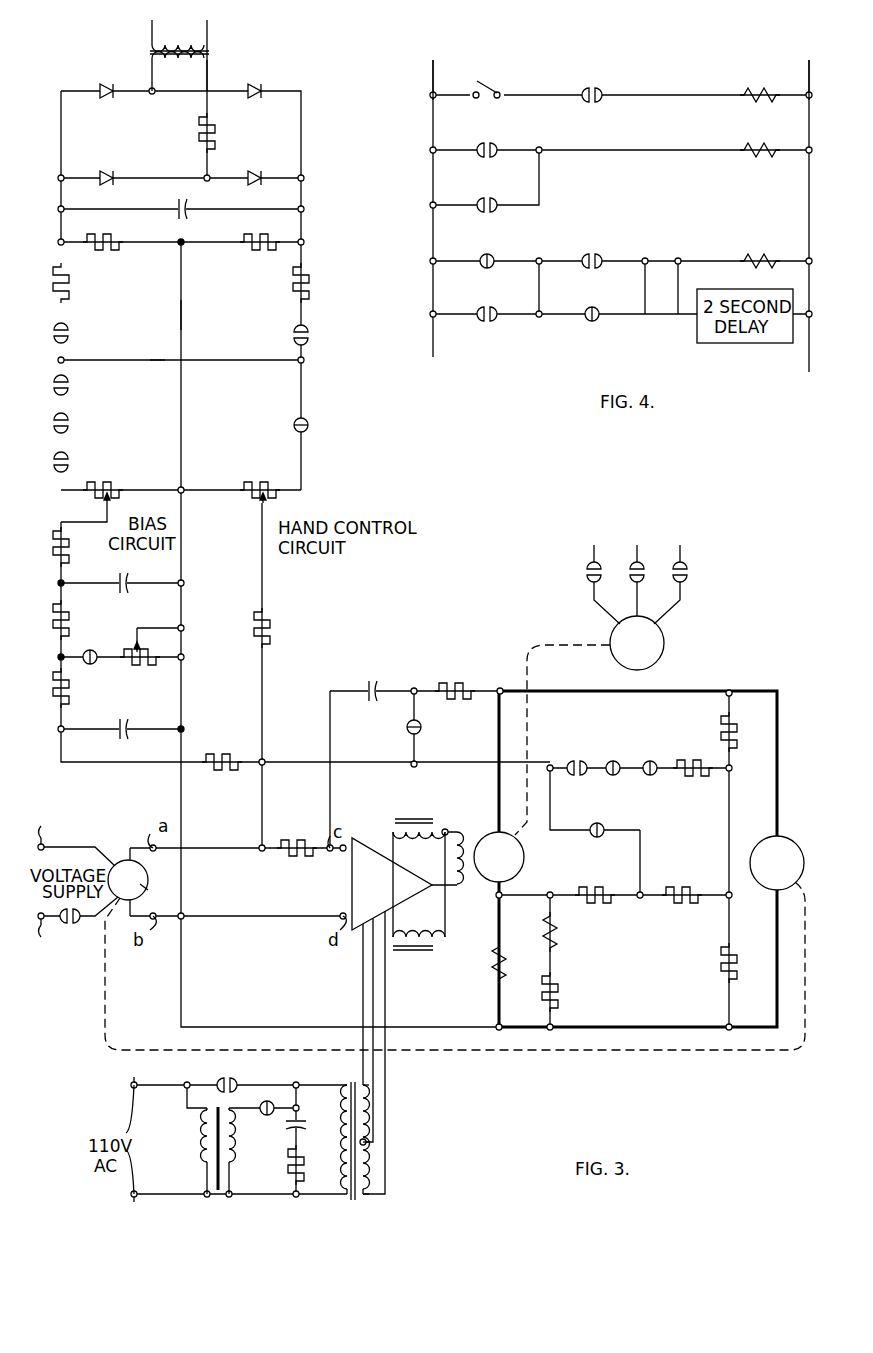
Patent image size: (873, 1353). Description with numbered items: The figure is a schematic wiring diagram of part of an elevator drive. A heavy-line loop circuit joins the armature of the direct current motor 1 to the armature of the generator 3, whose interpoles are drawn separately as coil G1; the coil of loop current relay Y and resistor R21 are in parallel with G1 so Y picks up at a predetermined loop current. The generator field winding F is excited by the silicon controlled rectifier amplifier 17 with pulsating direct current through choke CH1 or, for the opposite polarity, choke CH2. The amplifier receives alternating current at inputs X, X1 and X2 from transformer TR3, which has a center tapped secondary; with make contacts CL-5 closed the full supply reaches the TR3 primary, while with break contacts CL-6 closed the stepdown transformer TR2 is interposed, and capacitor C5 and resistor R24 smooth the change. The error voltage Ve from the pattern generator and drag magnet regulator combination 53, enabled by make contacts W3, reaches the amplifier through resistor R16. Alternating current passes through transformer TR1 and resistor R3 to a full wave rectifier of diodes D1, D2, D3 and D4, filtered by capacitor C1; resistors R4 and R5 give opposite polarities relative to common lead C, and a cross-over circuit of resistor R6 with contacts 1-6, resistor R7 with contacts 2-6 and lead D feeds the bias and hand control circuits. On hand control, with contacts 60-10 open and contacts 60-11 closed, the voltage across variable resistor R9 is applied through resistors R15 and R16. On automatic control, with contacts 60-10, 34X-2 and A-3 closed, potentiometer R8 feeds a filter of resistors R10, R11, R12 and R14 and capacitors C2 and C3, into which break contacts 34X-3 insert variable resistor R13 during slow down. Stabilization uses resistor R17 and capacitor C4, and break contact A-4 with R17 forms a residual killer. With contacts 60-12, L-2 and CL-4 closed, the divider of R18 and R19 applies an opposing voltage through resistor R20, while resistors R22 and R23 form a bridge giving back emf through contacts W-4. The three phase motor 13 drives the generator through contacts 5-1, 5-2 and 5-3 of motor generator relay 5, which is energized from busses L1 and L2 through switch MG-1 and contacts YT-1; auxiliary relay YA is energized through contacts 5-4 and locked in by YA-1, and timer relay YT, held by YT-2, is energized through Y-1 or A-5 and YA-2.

In FIG. 3, the transformer TR1 is at (208, 51).
In FIG. 3, the diode D1 is at (111, 82).
In FIG. 3, the diode D2 is at (111, 171).
In FIG. 3, the diode D3 is at (262, 70).
In FIG. 3, the diode D4 is at (262, 159).
In FIG. 3, the resistor R3 is at (200, 120).
In FIG. 3, the capacitor C1 is at (178, 200).
In FIG. 3, the resistor R4 is at (112, 234).
In FIG. 3, the resistor R5 is at (260, 234).
In FIG. 3, the resistor R6 is at (69, 282).
In FIG. 3, the resistor R7 is at (309, 281).
In FIG. 3, the common lead C is at (181, 302).
In FIG. 3, the lead D is at (153, 360).
In FIG. 3, the make contacts of the up direction relay 1-6 is at (68, 338).
In FIG. 3, the make contacts of the down direction relay 2-6 is at (308, 341).
In FIG. 3, the make contacts 60-10 is at (68, 382).
In FIG. 3, the make contacts 34X-2 is at (68, 423).
In FIG. 3, the make contacts A-3 is at (68, 460).
In FIG. 3, the break contacts 60-11 is at (308, 425).
In FIG. 3, the potentiometer R8 is at (114, 482).
In FIG. 3, the variable resistor R9 is at (268, 490).
In FIG. 3, the resistor R10 is at (71, 552).
In FIG. 3, the capacitor C2 is at (134, 566).
In FIG. 3, the resistor R11 is at (70, 614).
In FIG. 3, the break contacts 34X-3 is at (94, 638).
In FIG. 3, the variable resistor R13 is at (140, 673).
In FIG. 3, the resistor R12 is at (69, 689).
In FIG. 3, the capacitor C3 is at (132, 714).
In FIG. 3, the resistor R14 is at (224, 754).
In FIG. 3, the resistor R15 is at (270, 624).
In FIG. 3, the resistor R16 is at (298, 848).
In FIG. 3, the capacitor C4 is at (384, 668).
In FIG. 3, the resistor R17 is at (460, 683).
In FIG. 3, the break contact of the brake monitor relay A-4 is at (421, 727).
In FIG. 3, the pattern generator and drag magnet regulator combination 53 is at (146, 888).
In FIG. 3, the make contacts of the pattern selector relay W3 is at (64, 930).
In FIG. 3, the error voltage Ve is at (128, 880).
In FIG. 3, the silicon controlled rectifier amplifier 17 is at (352, 882).
In FIG. 3, the choke CH2 is at (393, 819).
In FIG. 3, the choke CH1 is at (430, 970).
In FIG. 3, the field winding F is at (464, 832).
In FIG. 3, the generator 3 is at (524, 850).
In FIG. 3, the generator interpole coil G1 is at (492, 958).
In FIG. 3, the loop current relay Y is at (557, 924).
In FIG. 3, the resistor R21 is at (558, 986).
In FIG. 3, the resistor R22 is at (590, 895).
In FIG. 3, the resistor R23 is at (682, 895).
In FIG. 3, the resistor R19 is at (724, 958).
In FIG. 3, the resistor R18 is at (737, 733).
In FIG. 3, the resistor R20 is at (691, 773).
In FIG. 3, the make contacts 60-12 is at (575, 757).
In FIG. 3, the break contacts L-2 is at (612, 777).
In FIG. 3, the break contacts CL-4 is at (644, 764).
In FIG. 3, the contacts of the pattern selector relay W-4 is at (600, 826).
In FIG. 3, the direct current motor 1 is at (800, 862).
In FIG. 3, the three phase alternating current motor 13 is at (662, 655).
In FIG. 3, the make contacts of the motor generator relay 5-1 is at (584, 562).
In FIG. 3, the make contacts of the motor generator relay 5-2 is at (630, 578).
In FIG. 3, the make contacts of the motor generator relay 5-3 is at (692, 578).
In FIG. 3, the stepdown transformer TR2 is at (220, 1194).
In FIG. 3, the transformer TR3 is at (352, 1200).
In FIG. 3, the make contacts of the current limiter relay CL-5 is at (234, 1078).
In FIG. 3, the break contacts of the current limiter relay CL-6 is at (264, 1115).
In FIG. 3, the capacitor C5 is at (304, 1126).
In FIG. 3, the resistor R24 is at (288, 1165).
In FIG. 3, the SCR amplifier input X1 is at (362, 1086).
In FIG. 3, the SCR amplifier input X is at (363, 1144).
In FIG. 3, the SCR amplifier input X2 is at (376, 1200).
In FIG. 4, the buss L1 is at (432, 76).
In FIG. 4, the buss L2 is at (809, 78).
In FIG. 4, the manual motor generator switch MG-1 is at (488, 86).
In FIG. 4, the make contacts of the loop current timing relay YT-1 is at (596, 88).
In FIG. 4, the motor generator relay 5 is at (758, 85).
In FIG. 4, the make contacts YA-1 is at (494, 144).
In FIG. 4, the loop current auxiliary relay YA is at (762, 142).
In FIG. 4, the make contacts of the motor generator relay 5-4 is at (492, 198).
In FIG. 4, the break contacts of the loop current relay Y-1 is at (490, 254).
In FIG. 4, the holding contacts YT-2 is at (596, 254).
In FIG. 4, the loop current timer relay YT is at (764, 254).
In FIG. 4, the make contacts of the brake monitoring relay A-5 is at (496, 306).
In FIG. 4, the break contacts of the auxiliary loop current monitoring relay YA-2 is at (600, 308).